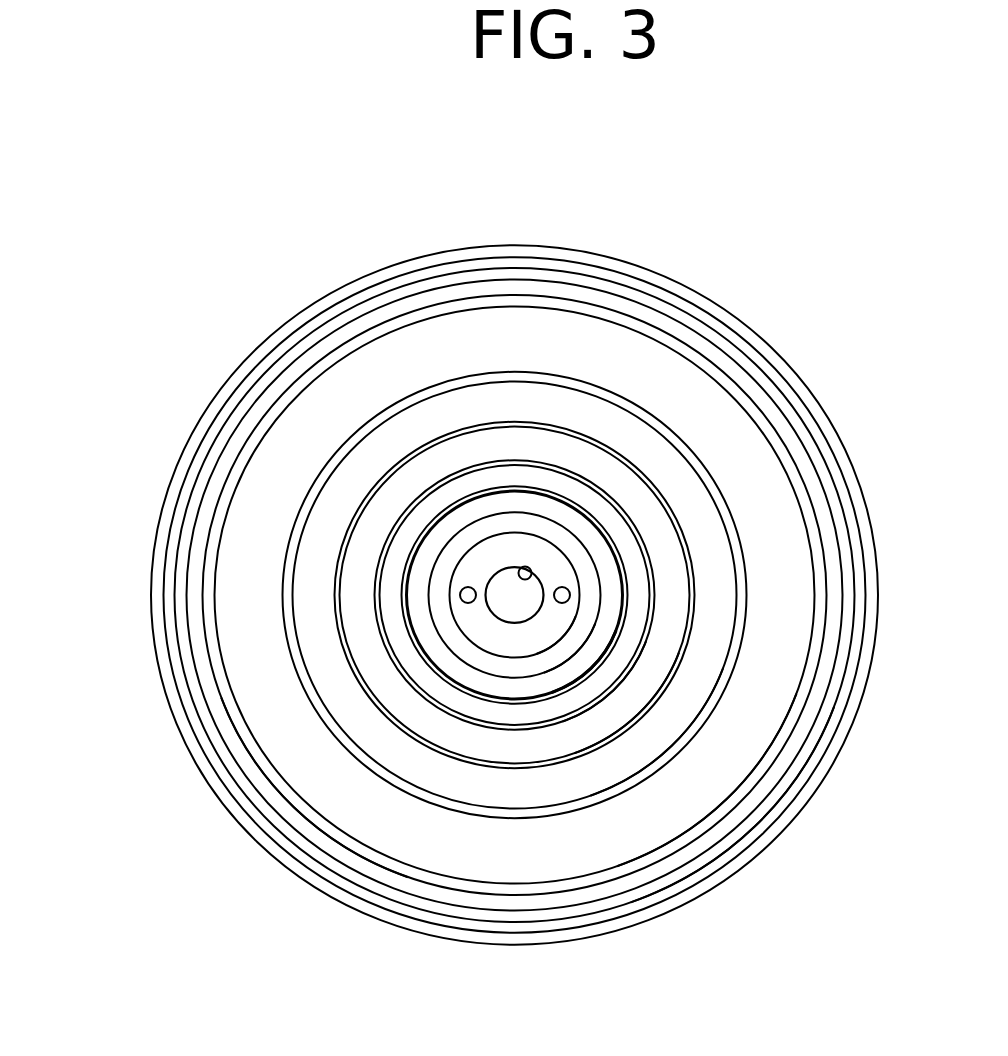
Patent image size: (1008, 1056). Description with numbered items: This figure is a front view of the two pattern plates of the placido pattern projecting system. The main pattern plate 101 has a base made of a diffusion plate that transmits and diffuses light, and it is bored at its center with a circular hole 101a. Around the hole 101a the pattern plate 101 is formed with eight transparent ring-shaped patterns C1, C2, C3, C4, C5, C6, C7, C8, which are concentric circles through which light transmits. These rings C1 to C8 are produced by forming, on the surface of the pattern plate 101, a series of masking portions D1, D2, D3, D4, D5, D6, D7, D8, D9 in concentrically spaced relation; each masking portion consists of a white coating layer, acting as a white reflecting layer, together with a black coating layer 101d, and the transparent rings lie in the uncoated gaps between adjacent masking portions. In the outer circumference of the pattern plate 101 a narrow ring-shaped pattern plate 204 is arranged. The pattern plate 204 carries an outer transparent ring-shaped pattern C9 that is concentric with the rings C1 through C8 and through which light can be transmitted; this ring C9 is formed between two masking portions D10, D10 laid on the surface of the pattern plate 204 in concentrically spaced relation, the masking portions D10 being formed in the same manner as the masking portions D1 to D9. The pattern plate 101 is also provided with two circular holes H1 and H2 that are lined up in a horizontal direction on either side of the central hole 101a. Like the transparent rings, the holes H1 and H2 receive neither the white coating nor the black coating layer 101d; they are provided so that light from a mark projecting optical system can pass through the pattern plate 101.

The pattern plate 101 is at (608, 268).
The circular hole 101a is at (527, 569).
The black coating layer 101d is at (282, 812).
The ring-shaped pattern plate 204 is at (328, 912).
The circular hole H1 is at (460, 597).
The circular hole H2 is at (568, 588).
The masking portion D1 is at (507, 557).
The masking portion D2 is at (460, 543).
The masking portion D3 is at (437, 537).
The masking portion D4 is at (413, 528).
The masking portion D5 is at (375, 513).
The masking portion D6 is at (333, 502).
The masking portion D7 is at (262, 470).
The masking portion D8 is at (225, 468).
The masking portion D9 is at (195, 500).
The masking portion D10 is at (166, 515).
The transparent ring-shaped pattern C1 is at (607, 647).
The transparent ring-shaped pattern C2 is at (580, 658).
The transparent ring-shaped pattern C3 is at (557, 653).
The transparent ring-shaped pattern C4 is at (545, 670).
The transparent ring-shaped pattern C5 is at (565, 725).
The transparent ring-shaped pattern C6 is at (553, 765).
The transparent ring-shaped pattern C7 is at (553, 813).
The transparent ring-shaped pattern C8 is at (556, 885).
The outer transparent ring-shaped pattern C9 is at (512, 930).